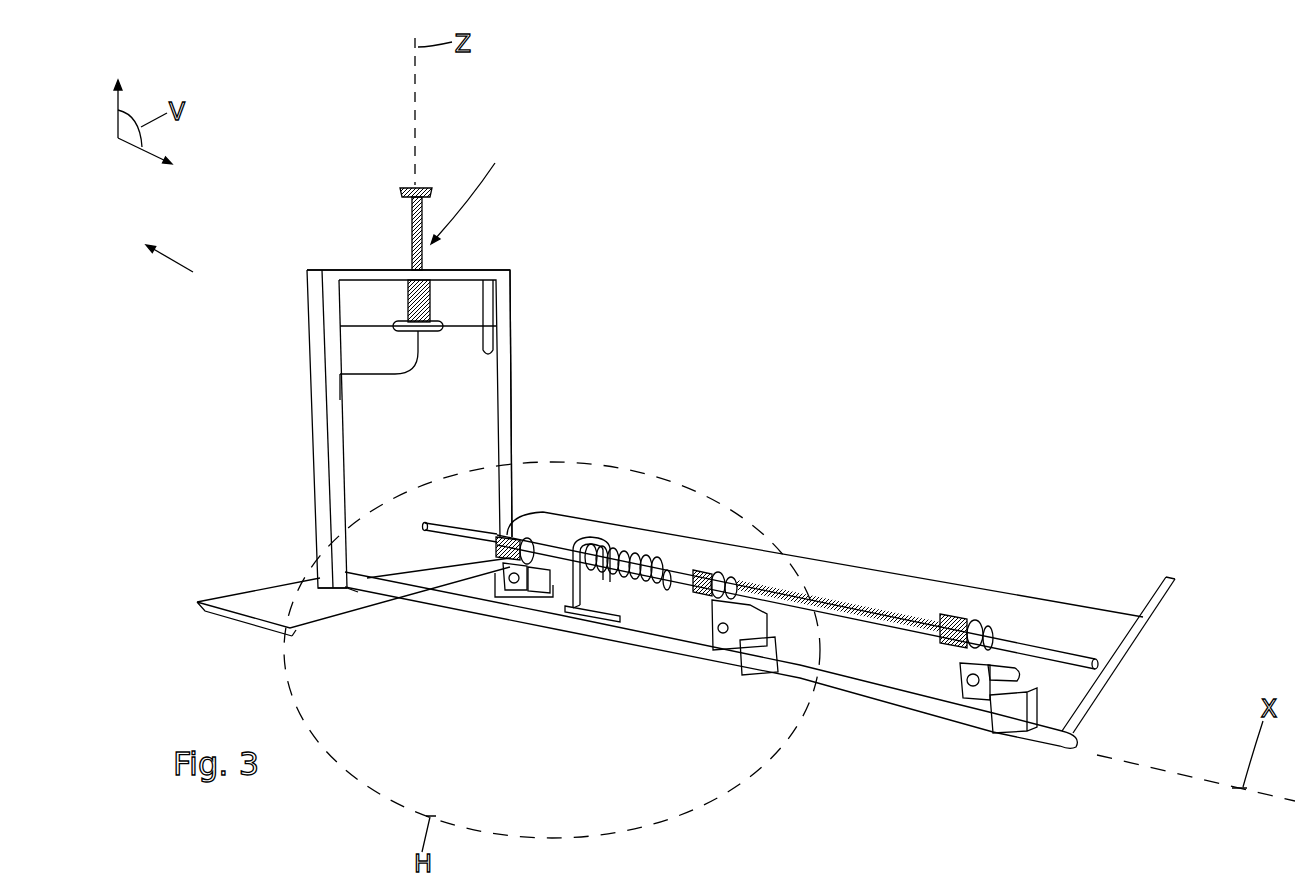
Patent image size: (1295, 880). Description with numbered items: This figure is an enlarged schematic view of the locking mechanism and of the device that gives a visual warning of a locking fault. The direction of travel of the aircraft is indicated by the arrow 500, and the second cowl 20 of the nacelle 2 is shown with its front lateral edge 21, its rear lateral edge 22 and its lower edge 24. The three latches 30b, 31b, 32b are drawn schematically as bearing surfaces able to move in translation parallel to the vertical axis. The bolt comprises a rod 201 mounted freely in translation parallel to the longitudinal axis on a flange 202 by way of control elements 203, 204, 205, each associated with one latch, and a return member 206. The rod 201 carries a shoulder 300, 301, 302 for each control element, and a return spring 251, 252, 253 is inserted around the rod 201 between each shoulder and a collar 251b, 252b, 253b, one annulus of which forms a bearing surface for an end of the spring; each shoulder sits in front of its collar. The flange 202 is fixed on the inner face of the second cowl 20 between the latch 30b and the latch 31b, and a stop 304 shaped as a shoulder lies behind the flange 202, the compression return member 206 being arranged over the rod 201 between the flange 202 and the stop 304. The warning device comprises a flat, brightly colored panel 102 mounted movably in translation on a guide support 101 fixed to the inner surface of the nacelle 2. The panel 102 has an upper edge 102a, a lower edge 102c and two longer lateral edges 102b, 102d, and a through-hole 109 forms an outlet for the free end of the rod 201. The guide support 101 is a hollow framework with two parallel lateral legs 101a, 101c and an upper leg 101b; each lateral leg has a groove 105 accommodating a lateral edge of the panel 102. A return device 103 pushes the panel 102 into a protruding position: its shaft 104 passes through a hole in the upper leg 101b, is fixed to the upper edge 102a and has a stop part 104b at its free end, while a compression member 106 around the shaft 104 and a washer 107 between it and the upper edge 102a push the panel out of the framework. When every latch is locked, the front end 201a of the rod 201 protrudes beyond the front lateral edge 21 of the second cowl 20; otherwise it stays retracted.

The nacelle 2 is at (210, 598).
The second cowl 20 is at (967, 590).
The front lateral edge 21 is at (522, 556).
The rear lateral edge 22 is at (1133, 640).
The lower edge 24 is at (883, 708).
The latch 30b is at (548, 600).
The latch 31b is at (750, 665).
The latch 32b is at (1013, 727).
The guide support 101 is at (300, 398).
The lateral leg 101a is at (313, 430).
The upper leg 101b is at (405, 312).
The lateral leg 101c is at (500, 395).
The panel 102 is at (360, 480).
The upper edge 102a is at (363, 347).
The lateral edge 102b is at (340, 372).
The lower edge 102c is at (360, 605).
The lateral edge 102d is at (505, 290).
The return device 103 is at (483, 192).
The shaft 104 is at (427, 183).
The stop part 104b is at (422, 222).
The groove 105 is at (473, 318).
The compression member 106 is at (406, 302).
The washer 107 is at (302, 393).
The through-hole 109 is at (440, 527).
The rod 201 is at (1143, 622).
The front end 201a is at (403, 600).
The flange 202 is at (575, 610).
The control element 203 is at (577, 600).
The control element 204 is at (775, 595).
The control element 205 is at (1068, 652).
The return member 206 is at (600, 548).
The return spring 251 is at (512, 535).
The collar 251b is at (537, 540).
The return spring 252 is at (712, 572).
The collar 252b is at (748, 612).
The return spring 253 is at (973, 665).
The collar 253b is at (992, 655).
The shoulder 300 is at (505, 590).
The shoulder 301 is at (672, 572).
The shoulder 302 is at (950, 622).
The stop 304 is at (655, 612).
The arrow 500 is at (173, 257).